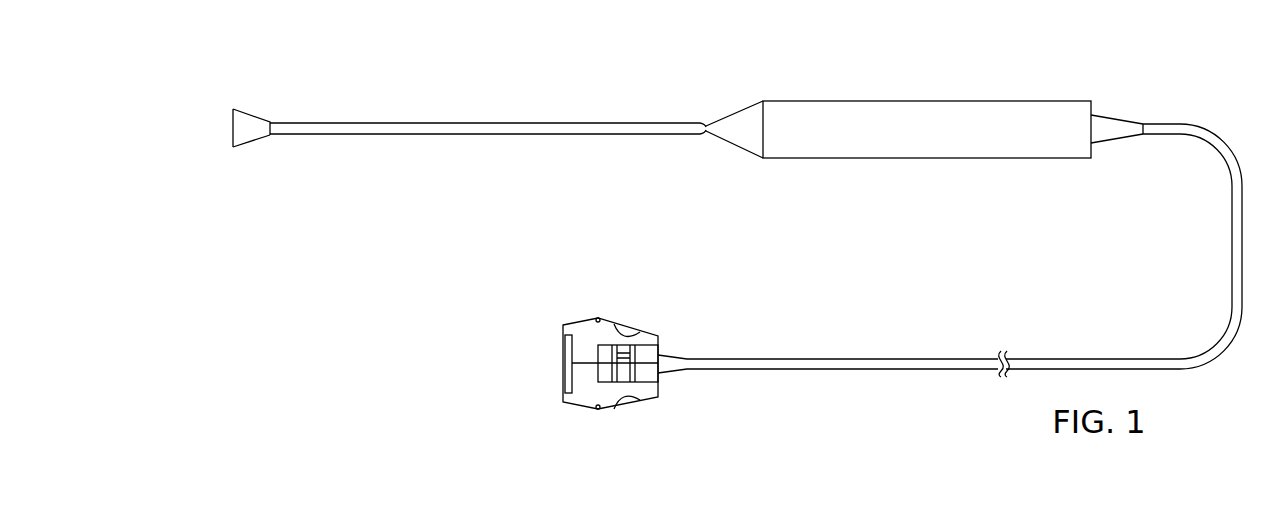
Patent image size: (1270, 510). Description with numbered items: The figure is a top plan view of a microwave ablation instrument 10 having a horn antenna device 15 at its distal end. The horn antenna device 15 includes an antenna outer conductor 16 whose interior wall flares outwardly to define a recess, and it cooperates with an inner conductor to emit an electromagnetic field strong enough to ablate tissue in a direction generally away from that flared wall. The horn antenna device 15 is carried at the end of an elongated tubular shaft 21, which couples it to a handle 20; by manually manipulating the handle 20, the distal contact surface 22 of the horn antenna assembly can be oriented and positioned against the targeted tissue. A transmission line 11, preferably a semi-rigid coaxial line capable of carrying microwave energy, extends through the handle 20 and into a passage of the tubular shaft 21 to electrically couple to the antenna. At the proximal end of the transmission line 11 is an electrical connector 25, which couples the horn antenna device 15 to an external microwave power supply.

The microwave ablation instrument 10 is at (466, 206).
The horn antenna device 15 is at (247, 102).
The distal contact surface 22 is at (233, 127).
The antenna outer conductor 16 is at (248, 142).
The elongated tubular shaft 21 is at (470, 123).
The handle 20 is at (877, 101).
The transmission line 11 is at (1232, 238).
The electrical connector 25 is at (598, 410).